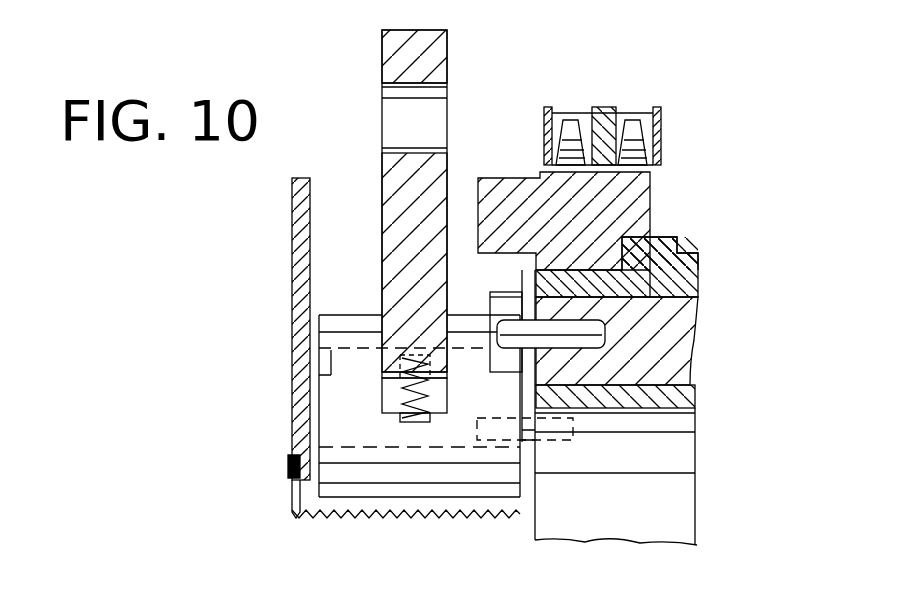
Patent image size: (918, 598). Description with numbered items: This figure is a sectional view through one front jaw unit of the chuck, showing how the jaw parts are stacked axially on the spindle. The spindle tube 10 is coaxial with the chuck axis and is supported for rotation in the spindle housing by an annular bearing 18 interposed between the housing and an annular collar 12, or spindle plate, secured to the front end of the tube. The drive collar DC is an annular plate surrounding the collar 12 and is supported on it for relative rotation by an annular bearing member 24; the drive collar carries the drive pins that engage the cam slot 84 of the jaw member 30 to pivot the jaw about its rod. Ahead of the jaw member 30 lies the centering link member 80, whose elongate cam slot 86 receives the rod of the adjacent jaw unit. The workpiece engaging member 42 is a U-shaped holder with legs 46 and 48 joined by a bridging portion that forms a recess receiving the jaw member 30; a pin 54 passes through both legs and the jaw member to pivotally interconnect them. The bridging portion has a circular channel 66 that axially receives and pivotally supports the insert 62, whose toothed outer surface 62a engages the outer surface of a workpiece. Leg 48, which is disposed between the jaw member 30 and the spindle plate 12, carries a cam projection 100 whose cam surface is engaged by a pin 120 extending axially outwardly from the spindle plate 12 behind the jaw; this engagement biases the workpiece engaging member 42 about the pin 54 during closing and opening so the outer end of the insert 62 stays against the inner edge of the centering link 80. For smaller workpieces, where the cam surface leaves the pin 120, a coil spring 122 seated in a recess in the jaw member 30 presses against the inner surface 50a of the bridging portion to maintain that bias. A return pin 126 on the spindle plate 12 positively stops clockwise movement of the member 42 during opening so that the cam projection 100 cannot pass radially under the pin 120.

The jaw member 30 is at (402, 52).
The cam slot 84 is at (408, 88).
The centering link member 80 is at (290, 212).
The cam slot 86 is at (300, 380).
The leg 46 is at (390, 333).
The pin 54 is at (355, 345).
The leg 48 is at (465, 320).
The inner surface 50a is at (383, 410).
The coil spring 122 is at (430, 395).
The channel 66 is at (360, 447).
The insert 62 is at (318, 494).
The toothed outer surface 62a is at (412, 512).
The drive collar DC is at (668, 165).
The cam projection 100 is at (503, 292).
The annular bearing member 24 is at (648, 243).
The annular bearing 18 is at (648, 283).
The annular collar 12 is at (662, 362).
The spindle tube 10 is at (690, 398).
The pin 120 is at (605, 325).
The workpiece engaging member 42 is at (532, 478).
The return pin 126 is at (572, 440).